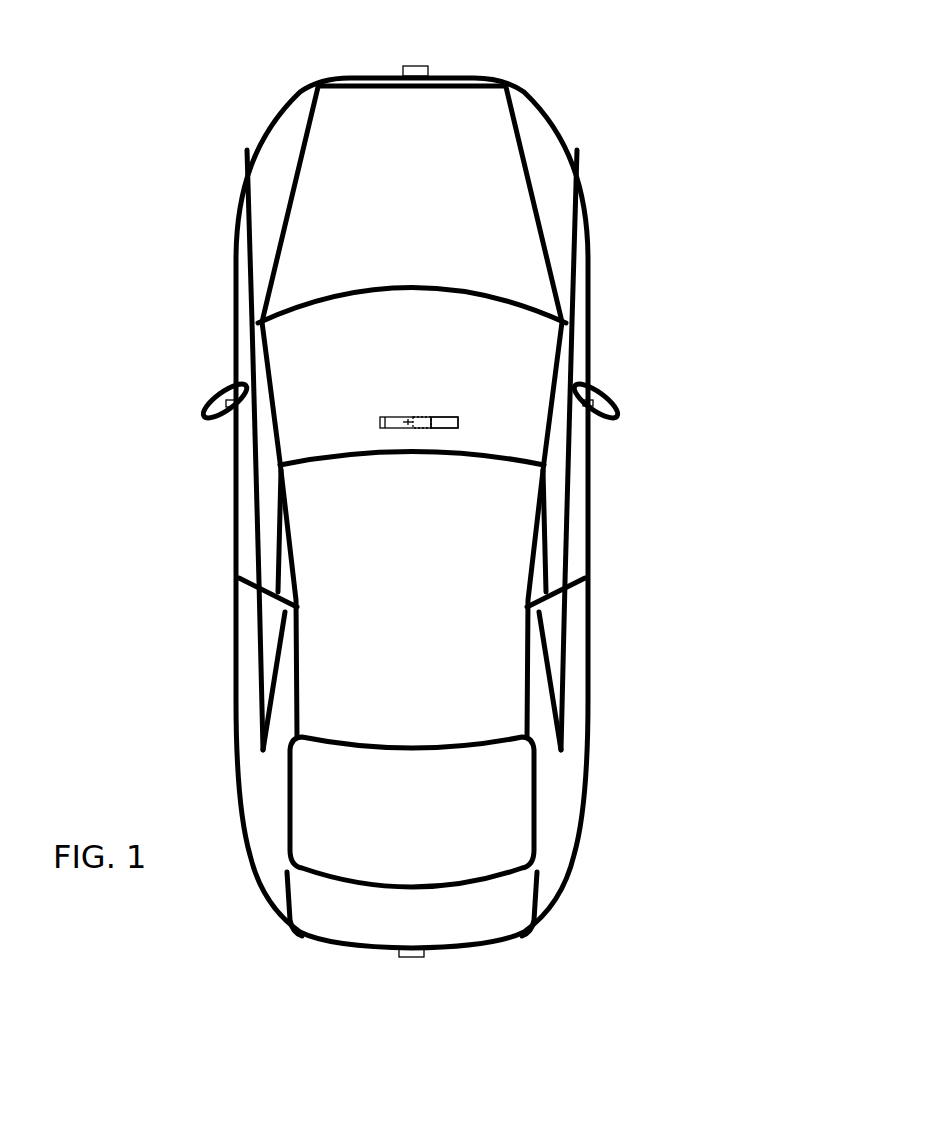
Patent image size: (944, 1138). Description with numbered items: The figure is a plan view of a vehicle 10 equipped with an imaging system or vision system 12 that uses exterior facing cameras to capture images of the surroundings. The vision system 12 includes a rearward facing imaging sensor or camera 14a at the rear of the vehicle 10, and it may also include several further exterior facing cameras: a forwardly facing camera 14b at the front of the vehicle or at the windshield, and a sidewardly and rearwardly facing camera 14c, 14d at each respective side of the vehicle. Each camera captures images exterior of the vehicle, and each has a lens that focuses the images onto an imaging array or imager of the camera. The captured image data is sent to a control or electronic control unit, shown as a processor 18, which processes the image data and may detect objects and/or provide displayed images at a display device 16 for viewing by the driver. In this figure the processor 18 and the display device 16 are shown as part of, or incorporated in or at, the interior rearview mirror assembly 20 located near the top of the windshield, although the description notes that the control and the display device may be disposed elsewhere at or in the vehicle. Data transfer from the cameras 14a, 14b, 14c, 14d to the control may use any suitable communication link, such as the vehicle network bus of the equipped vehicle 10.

The vehicle 10 is at (182, 153).
The vision system 12 is at (355, 982).
The rearward facing camera 14a is at (415, 957).
The forwardly facing camera 14b is at (419, 67).
The sidewardly/rearwardly facing camera 14c is at (226, 401).
The sidewardly/rearwardly facing camera 14d is at (592, 402).
The display device 16 is at (397, 419).
The processor 18 is at (417, 418).
The interior rearview mirror assembly 20 is at (458, 417).